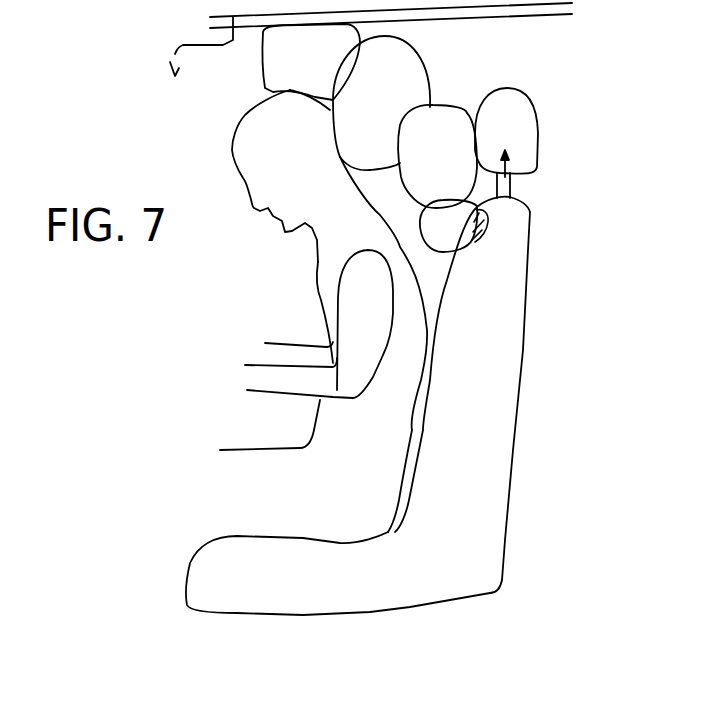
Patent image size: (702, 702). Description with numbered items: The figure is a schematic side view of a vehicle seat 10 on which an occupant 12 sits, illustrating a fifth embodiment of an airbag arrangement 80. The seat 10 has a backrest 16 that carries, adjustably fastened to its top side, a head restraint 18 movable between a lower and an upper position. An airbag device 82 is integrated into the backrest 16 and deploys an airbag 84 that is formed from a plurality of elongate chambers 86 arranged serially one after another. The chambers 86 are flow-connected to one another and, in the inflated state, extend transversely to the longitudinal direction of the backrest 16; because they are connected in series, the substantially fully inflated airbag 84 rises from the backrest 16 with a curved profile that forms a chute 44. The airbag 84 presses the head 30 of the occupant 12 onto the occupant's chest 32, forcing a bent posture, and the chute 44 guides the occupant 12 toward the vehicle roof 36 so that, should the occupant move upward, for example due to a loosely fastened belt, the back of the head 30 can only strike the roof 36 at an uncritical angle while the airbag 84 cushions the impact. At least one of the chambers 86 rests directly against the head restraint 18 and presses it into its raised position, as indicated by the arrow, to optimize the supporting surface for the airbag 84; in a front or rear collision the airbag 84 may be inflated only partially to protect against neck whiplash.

The vehicle seat 10 is at (395, 386).
The occupant 12 is at (288, 260).
The backrest 16 is at (505, 347).
The head restraint 18 is at (520, 113).
The head 30 is at (245, 143).
The chest 32 is at (330, 299).
The vehicle roof 36 is at (551, 8).
The chute 44 is at (285, 91).
The airbag arrangement 80 is at (493, 220).
The airbag device 82 is at (488, 233).
The airbag 84 is at (463, 103).
The elongate chambers 86 is at (413, 78).